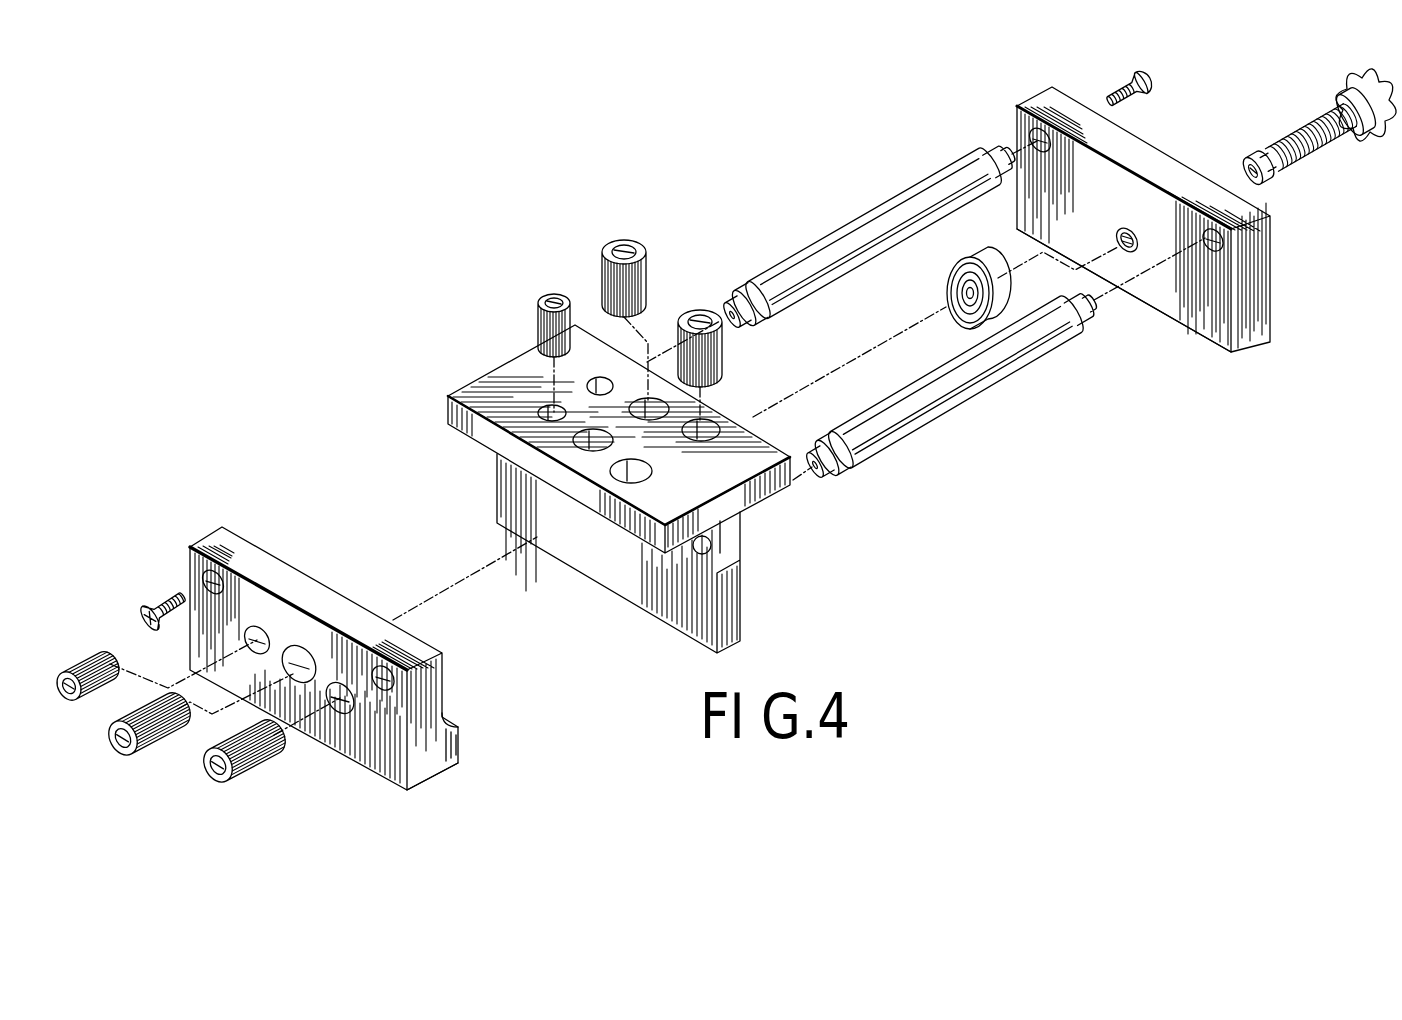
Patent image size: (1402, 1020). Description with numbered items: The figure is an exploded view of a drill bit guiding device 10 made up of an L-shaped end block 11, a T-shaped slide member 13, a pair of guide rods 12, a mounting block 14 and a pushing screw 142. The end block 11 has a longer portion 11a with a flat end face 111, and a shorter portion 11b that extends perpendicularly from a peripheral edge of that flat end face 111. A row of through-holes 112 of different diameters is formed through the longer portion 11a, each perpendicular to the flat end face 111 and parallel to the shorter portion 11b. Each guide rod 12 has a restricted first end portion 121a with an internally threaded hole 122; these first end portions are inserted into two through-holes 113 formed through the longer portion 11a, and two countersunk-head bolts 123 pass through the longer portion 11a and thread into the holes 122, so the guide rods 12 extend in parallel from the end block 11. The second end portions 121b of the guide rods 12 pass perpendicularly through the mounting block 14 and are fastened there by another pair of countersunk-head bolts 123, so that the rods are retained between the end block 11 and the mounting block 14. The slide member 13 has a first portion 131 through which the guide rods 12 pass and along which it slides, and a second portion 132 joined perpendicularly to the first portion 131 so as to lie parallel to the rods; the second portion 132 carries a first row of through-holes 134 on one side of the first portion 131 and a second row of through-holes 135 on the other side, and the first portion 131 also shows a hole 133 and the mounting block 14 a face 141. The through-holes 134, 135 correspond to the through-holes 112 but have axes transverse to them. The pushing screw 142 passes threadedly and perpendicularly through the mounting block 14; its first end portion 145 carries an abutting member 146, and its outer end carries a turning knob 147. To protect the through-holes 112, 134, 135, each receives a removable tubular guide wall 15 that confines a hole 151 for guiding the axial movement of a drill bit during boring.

The roller assembly 10 is at (592, 468).
The L-shaped end block 11 is at (255, 560).
The flat end face 111 is at (443, 693).
The through-holes 112 is at (337, 684).
The through-holes 113 is at (213, 570).
The longer portion 11a is at (352, 650).
The shorter portion 11b is at (423, 773).
The guide rods 12 is at (877, 227).
The restricted first end portion 121a is at (752, 278).
The second end portion 121b is at (1093, 317).
The internally threaded holes 122 is at (727, 303).
The countersunk-head bolts 123 is at (158, 604).
The T-shaped slide member 13 is at (447, 408).
The first portion 131 is at (600, 567).
The second portion 132 is at (467, 395).
The hole in side wall 133 is at (707, 545).
The first row of through-holes 134 is at (612, 470).
The second row of through-holes 135 is at (703, 426).
The mounting block 14 is at (1270, 285).
The front face of second end block 141 is at (1263, 240).
The pushing screw 142 is at (1313, 117).
The first end portion 145 is at (1267, 147).
The abutting member 146 is at (946, 283).
The turning knob 147 is at (1375, 140).
The tubular guide wall 15 is at (542, 317).
The hole 151 is at (555, 297).